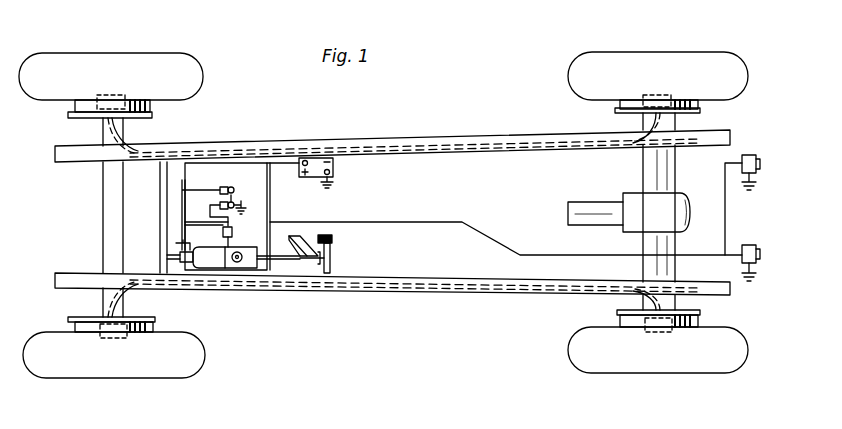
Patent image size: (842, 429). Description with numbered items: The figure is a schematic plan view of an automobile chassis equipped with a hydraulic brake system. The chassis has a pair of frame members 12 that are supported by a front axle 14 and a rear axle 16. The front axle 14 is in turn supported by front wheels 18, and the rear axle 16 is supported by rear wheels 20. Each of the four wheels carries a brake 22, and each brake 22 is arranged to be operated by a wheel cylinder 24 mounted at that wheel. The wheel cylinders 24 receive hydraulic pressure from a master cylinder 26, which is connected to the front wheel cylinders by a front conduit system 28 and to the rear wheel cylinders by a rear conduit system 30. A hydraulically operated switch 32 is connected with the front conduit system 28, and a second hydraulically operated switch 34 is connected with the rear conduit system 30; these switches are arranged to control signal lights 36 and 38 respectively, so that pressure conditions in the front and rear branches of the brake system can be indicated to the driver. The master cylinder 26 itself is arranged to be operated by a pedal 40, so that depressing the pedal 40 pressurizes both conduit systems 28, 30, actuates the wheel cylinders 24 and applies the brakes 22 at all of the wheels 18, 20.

The frame members 12 is at (245, 146).
The front axle 14 is at (103, 205).
The rear axle 16 is at (658, 162).
The front wheels 18 is at (118, 65).
The rear wheels 20 is at (615, 65).
The brake 22 is at (152, 110).
The wheel cylinder 24 is at (82, 108).
The master cylinder 26 is at (230, 270).
The front conduit system 28 is at (163, 226).
The rear conduit system 30 is at (420, 143).
The hydraulically operated switch 32 is at (178, 266).
The hydraulically operated switch 34 is at (233, 232).
The signal light 36 is at (231, 187).
The signal light 38 is at (237, 210).
The pedal 40 is at (331, 241).